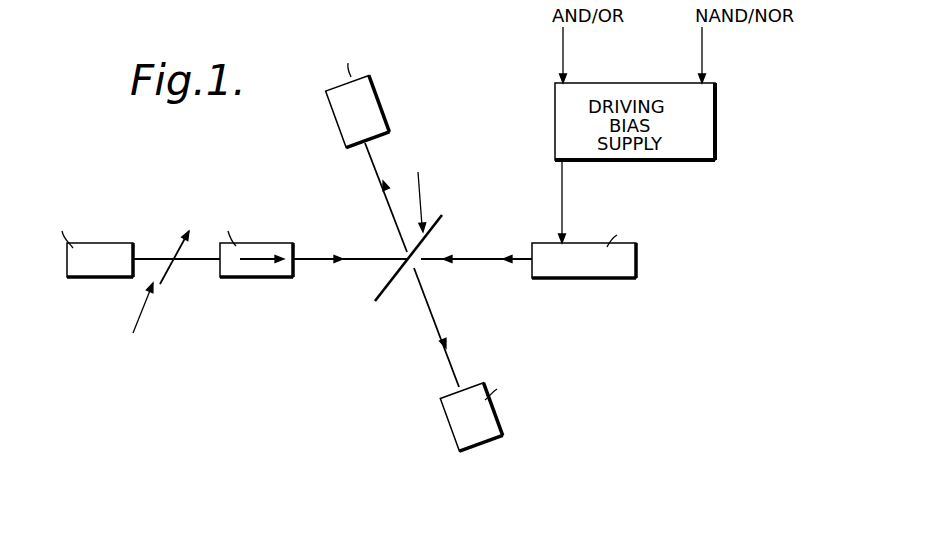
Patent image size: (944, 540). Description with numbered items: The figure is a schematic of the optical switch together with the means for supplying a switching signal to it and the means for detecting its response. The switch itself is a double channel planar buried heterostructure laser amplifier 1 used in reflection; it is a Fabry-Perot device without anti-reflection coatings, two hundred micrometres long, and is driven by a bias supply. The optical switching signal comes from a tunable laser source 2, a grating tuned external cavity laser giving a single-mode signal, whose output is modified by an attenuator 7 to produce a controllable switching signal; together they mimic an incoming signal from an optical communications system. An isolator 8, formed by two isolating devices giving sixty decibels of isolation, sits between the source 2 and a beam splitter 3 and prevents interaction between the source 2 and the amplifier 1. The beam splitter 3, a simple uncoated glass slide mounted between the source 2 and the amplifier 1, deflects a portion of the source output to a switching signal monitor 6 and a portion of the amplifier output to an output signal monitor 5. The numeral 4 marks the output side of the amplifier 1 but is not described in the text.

The laser amplifier 1 is at (575, 243).
The tunable laser source 2 is at (100, 278).
The beam splitter 3 is at (430, 235).
The laser amplifier output facet 4 is at (637, 265).
The output signal monitor 5 is at (447, 417).
The switching signal monitor 6 is at (382, 98).
The attenuator 7 is at (170, 281).
The isolator 8 is at (255, 278).